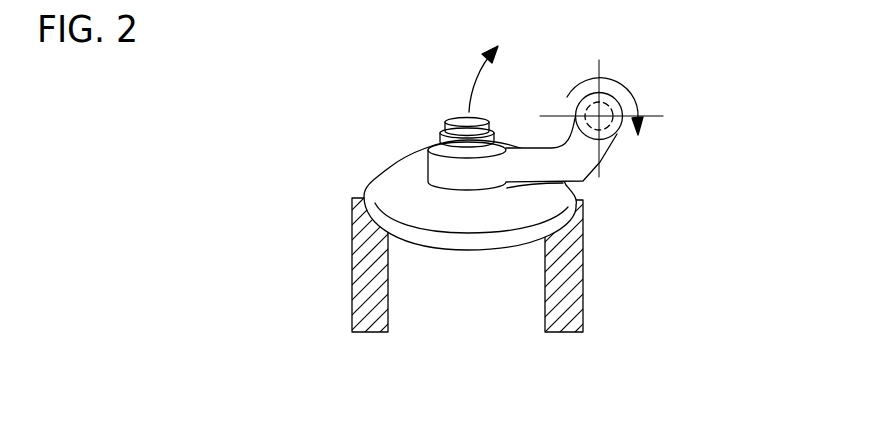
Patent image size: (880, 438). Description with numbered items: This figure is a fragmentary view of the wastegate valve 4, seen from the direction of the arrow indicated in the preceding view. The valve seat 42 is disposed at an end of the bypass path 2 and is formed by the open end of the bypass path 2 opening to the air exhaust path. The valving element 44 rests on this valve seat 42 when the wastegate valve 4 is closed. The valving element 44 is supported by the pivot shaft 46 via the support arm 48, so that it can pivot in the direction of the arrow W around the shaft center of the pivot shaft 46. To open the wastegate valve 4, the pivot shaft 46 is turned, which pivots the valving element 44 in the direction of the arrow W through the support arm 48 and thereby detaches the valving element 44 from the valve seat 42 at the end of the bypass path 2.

The bypass path 2 is at (468, 280).
The wastegate valve 4 is at (479, 138).
The valve seat 42 is at (360, 197).
The valving element 44 is at (396, 184).
The pivot shaft 46 is at (608, 128).
The support arm 48 is at (441, 172).